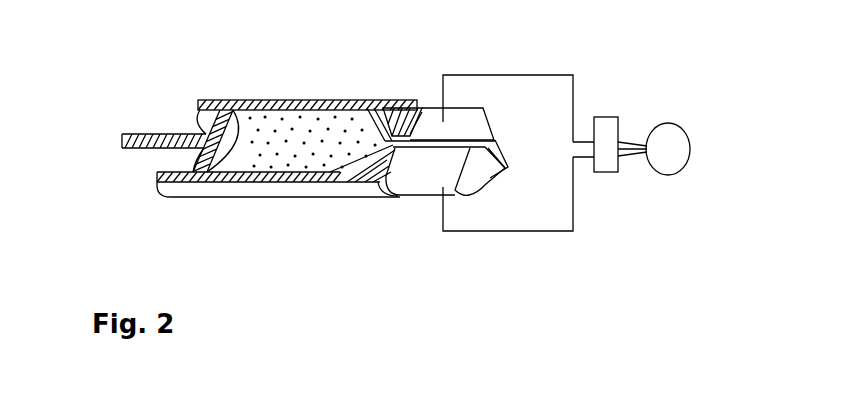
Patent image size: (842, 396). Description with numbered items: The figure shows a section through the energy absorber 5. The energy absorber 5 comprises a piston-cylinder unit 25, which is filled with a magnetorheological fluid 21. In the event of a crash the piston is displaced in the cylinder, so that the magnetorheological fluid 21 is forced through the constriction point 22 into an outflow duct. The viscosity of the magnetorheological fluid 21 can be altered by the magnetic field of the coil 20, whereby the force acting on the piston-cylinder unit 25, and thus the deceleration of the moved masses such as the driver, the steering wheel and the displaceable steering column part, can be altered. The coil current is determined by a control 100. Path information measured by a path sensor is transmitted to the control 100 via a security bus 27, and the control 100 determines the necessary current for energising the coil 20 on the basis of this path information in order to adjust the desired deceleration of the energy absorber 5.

The energy absorber 5 is at (272, 212).
The coil 20 is at (410, 188).
The magnetorheological fluid 21 is at (280, 137).
The constriction point 22 is at (368, 107).
The piston-cylinder unit 25 is at (253, 100).
The security bus 27 is at (670, 133).
The control 100 is at (600, 123).